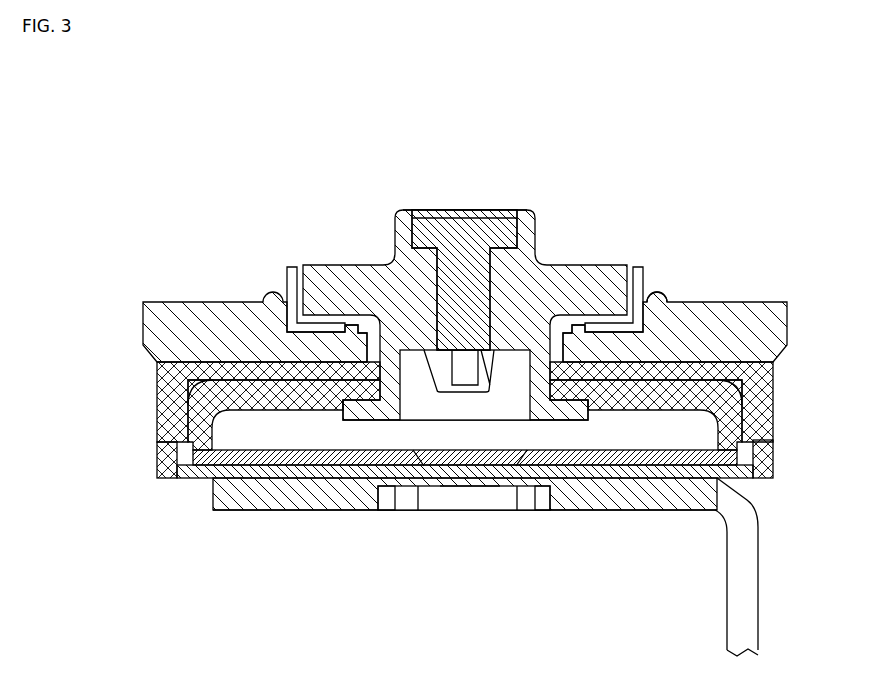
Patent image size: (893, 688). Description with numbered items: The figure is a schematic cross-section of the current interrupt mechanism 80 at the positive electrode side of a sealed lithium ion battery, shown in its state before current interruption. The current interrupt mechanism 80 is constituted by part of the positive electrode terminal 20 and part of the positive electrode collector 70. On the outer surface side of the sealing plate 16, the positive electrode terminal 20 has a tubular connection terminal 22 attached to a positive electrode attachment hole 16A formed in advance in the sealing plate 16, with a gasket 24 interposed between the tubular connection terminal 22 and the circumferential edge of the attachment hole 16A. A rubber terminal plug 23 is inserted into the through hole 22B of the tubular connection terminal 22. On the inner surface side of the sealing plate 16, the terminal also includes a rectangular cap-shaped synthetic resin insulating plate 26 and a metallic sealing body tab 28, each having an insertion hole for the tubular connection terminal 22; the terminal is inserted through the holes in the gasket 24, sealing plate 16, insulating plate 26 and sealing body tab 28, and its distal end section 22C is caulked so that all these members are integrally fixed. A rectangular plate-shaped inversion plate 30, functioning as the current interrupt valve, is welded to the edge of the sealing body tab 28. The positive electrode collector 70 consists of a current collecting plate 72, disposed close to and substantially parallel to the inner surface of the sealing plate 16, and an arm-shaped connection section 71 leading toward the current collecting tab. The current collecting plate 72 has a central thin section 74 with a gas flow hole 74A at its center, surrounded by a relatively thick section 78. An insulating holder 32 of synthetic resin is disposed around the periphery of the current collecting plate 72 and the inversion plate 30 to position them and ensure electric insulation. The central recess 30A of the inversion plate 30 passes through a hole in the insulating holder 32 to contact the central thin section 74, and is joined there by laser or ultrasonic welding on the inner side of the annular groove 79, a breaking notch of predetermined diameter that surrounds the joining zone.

The sealing plate 16 is at (200, 305).
The positive electrode attachment hole 16A is at (650, 288).
The positive electrode terminal 20 is at (461, 292).
The tubular connection terminal 22 is at (484, 292).
The through hole 22B is at (507, 207).
The distal end section 22C is at (372, 428).
The terminal plug 23 is at (457, 227).
The gasket 24 is at (293, 265).
The insulating plate 26 is at (150, 380).
The sealing body tab 28 is at (150, 412).
The inversion plate 30 is at (243, 445).
The central recess 30A is at (460, 505).
The insulating holder 32 is at (185, 485).
The positive electrode collector 70 is at (779, 567).
The connection section 71 is at (763, 633).
The current collecting plate 72 is at (465, 534).
The central thin section 74 is at (383, 513).
The gas flow hole 74A is at (480, 495).
The thick section 78 is at (317, 512).
The annular groove 79 is at (415, 510).
The current interrupt mechanism 80 is at (220, 161).